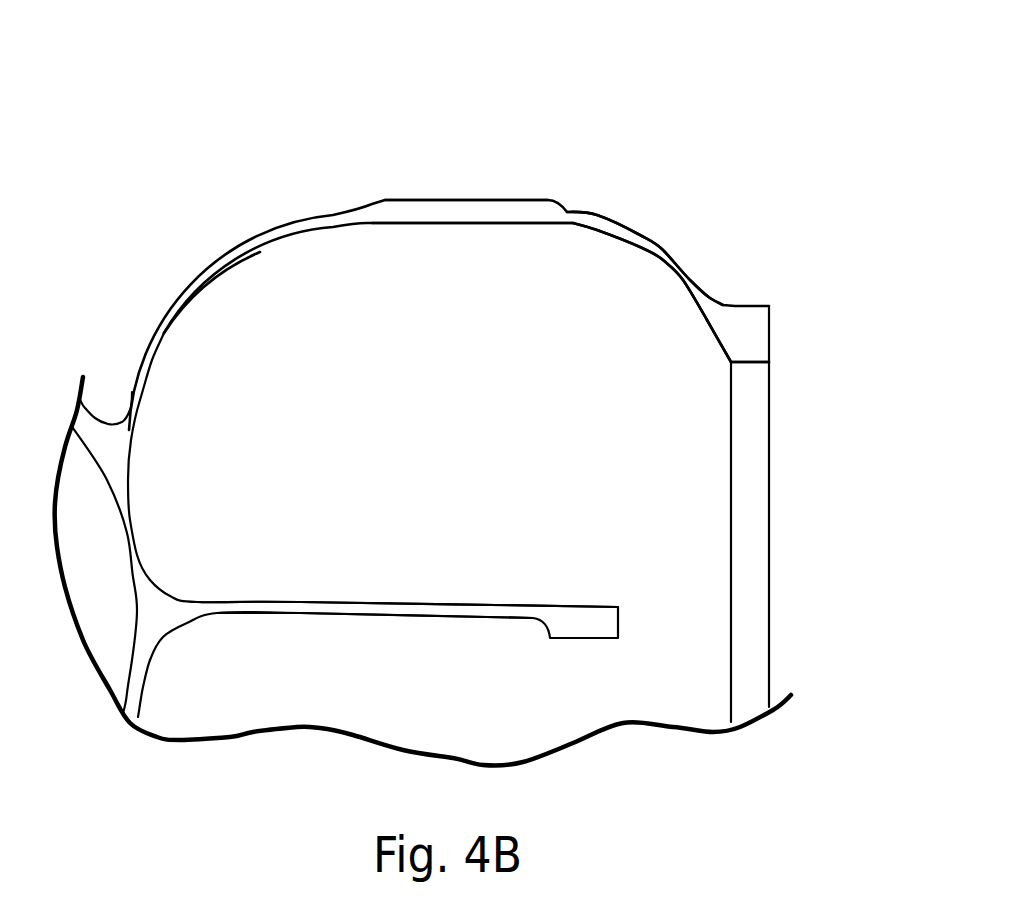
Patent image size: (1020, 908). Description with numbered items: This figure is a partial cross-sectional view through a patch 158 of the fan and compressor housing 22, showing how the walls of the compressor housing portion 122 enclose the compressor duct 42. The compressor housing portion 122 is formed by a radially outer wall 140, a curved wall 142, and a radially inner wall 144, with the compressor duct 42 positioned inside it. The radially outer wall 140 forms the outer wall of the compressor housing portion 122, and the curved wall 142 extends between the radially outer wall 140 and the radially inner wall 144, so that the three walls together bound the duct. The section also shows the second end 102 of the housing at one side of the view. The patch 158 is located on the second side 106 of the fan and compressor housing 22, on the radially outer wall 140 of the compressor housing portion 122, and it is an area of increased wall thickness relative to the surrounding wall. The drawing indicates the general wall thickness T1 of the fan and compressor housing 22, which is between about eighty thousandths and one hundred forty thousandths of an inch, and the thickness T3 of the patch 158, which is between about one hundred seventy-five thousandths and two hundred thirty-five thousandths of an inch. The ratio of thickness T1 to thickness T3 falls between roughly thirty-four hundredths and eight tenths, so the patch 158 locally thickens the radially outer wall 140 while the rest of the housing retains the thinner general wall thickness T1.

The fan and compressor housing 22 is at (111, 112).
The compressor duct 42 is at (437, 411).
The second end 102 is at (770, 490).
The second side 106 is at (333, 212).
The compressor housing portion 122 is at (740, 190).
The radially outer wall 140 is at (567, 215).
The curved wall 142 is at (193, 293).
The radially inner wall 144 is at (332, 608).
The patch 158 is at (508, 210).
The thickness T1 is at (272, 295).
The thickness T3 is at (449, 265).